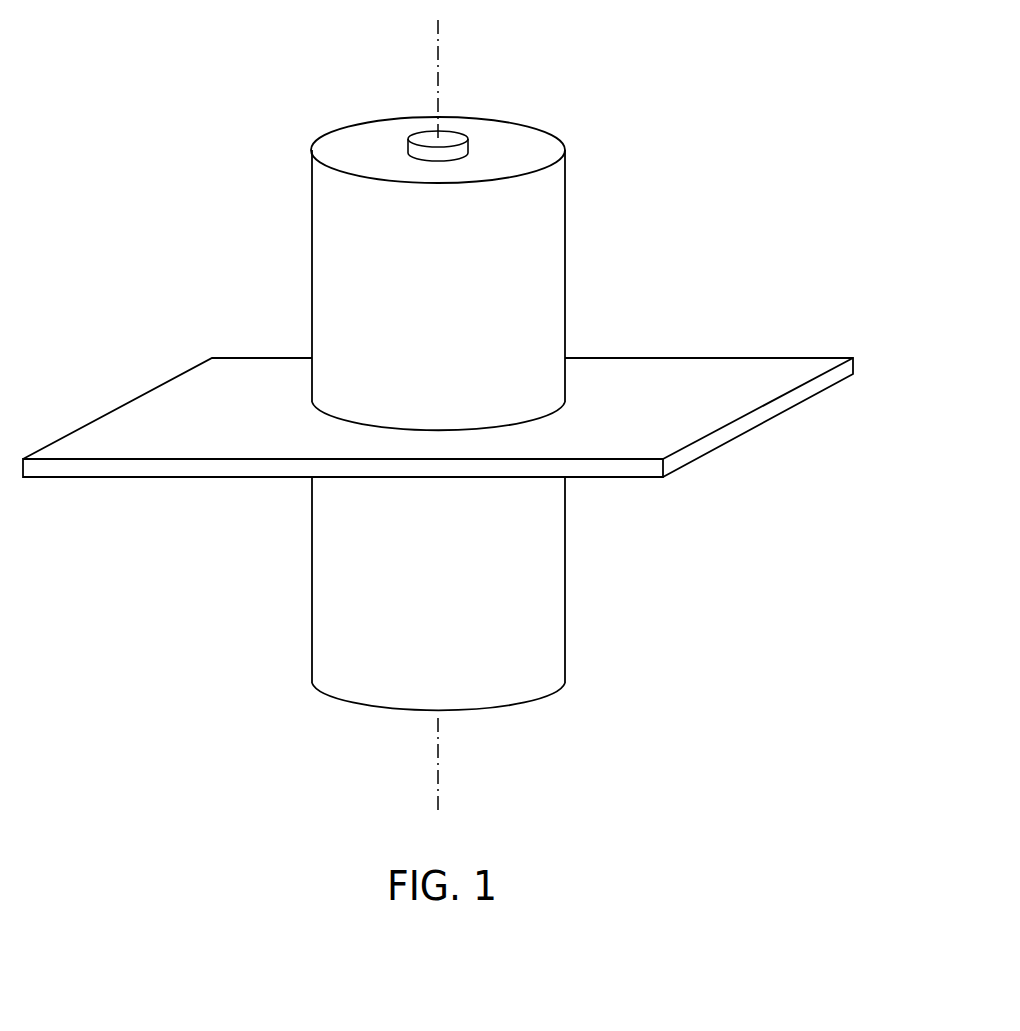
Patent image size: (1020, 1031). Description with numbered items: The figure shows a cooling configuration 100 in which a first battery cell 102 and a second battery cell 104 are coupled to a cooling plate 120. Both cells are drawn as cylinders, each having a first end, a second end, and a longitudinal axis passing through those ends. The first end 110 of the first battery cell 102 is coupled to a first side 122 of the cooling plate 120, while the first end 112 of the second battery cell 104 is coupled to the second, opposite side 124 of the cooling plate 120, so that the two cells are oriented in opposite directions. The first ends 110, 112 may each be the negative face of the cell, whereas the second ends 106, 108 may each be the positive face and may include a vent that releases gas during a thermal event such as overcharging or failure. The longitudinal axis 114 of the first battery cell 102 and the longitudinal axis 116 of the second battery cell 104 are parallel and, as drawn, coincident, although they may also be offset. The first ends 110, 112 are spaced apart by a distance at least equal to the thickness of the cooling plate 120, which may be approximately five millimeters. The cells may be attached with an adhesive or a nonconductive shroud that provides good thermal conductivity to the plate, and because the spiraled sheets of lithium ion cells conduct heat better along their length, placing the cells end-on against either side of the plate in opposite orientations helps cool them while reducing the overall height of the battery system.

The cooling configuration 100 is at (236, 54).
The first battery cell 102 is at (540, 212).
The second battery cell 104 is at (538, 623).
The second end of first battery cell 106 is at (510, 137).
The second end of second battery cell 108 is at (545, 702).
The first end of first battery cell 110 is at (543, 423).
The first end of second battery cell 112 is at (571, 486).
The longitudinal axis of first battery cell 114 is at (440, 85).
The longitudinal axis of second battery cell 116 is at (433, 752).
The cooling plate 120 is at (812, 435).
The first side of cooling plate 122 is at (164, 428).
The second side of cooling plate 124 is at (163, 484).